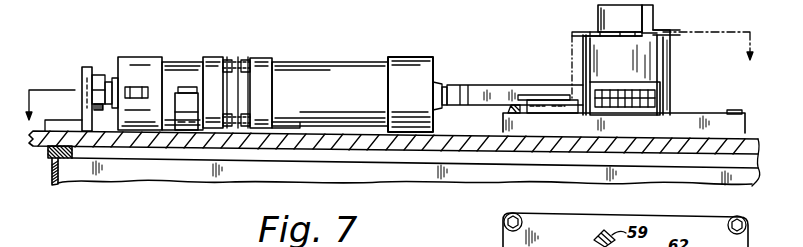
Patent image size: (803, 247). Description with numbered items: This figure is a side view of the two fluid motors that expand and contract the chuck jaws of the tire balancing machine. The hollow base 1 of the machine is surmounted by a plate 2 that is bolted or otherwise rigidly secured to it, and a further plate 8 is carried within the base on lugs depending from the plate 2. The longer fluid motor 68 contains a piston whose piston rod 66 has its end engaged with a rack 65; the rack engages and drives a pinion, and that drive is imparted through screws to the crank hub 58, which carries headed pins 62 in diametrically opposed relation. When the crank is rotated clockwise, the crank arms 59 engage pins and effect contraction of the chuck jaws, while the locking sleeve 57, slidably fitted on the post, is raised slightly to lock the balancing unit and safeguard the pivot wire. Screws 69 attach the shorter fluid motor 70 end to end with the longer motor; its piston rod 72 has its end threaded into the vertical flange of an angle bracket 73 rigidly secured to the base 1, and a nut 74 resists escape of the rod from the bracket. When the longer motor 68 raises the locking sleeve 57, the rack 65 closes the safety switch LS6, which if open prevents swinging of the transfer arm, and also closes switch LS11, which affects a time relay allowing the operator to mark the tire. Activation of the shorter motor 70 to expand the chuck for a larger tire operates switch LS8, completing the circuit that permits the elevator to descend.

The hollow base 1 is at (134, 176).
The plate 2 is at (503, 121).
The plate 8 is at (387, 66).
The locking sleeve 57 is at (598, 18).
The hub 58 is at (583, 57).
The crank arms 59 is at (656, 5).
The headed pins 62 is at (572, 33).
The rack 65 is at (667, 88).
The piston rod 66 is at (442, 82).
The fluid motor 68 is at (345, 62).
The screws 69 is at (252, 60).
The fluid motor 70 is at (192, 62).
The piston rod 72 is at (112, 79).
The angle bracket 73 is at (82, 68).
The nut 74 is at (98, 74).
The switch LS6 is at (565, 114).
The switch LS8 is at (174, 103).
The switch LS11 is at (553, 77).